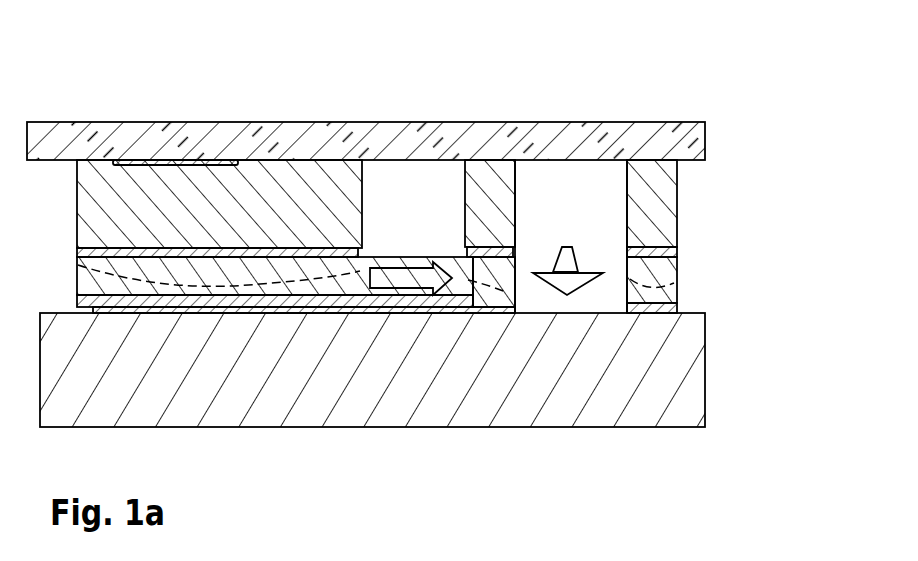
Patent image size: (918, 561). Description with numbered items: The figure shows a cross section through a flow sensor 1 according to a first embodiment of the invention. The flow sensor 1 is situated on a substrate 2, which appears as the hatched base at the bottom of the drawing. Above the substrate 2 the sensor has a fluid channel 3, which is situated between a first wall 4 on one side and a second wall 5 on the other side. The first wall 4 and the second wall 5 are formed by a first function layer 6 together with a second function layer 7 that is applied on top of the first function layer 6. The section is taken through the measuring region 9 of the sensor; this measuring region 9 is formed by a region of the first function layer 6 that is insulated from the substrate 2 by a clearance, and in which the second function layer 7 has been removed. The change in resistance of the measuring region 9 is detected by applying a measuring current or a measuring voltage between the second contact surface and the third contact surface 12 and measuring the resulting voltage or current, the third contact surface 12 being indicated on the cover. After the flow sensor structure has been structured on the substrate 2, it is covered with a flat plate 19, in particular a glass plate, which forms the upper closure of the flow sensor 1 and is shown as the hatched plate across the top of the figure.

The flow sensor 1 is at (721, 90).
The substrate 2 is at (675, 360).
The fluid channel 3 is at (563, 183).
The first wall 4 is at (516, 210).
The second wall 5 is at (625, 197).
The first function layer 6 is at (663, 293).
The second function layer 7 is at (484, 183).
The measuring region 9 is at (398, 265).
The third contact surface 12 is at (148, 162).
The flat plate 19 is at (81, 142).